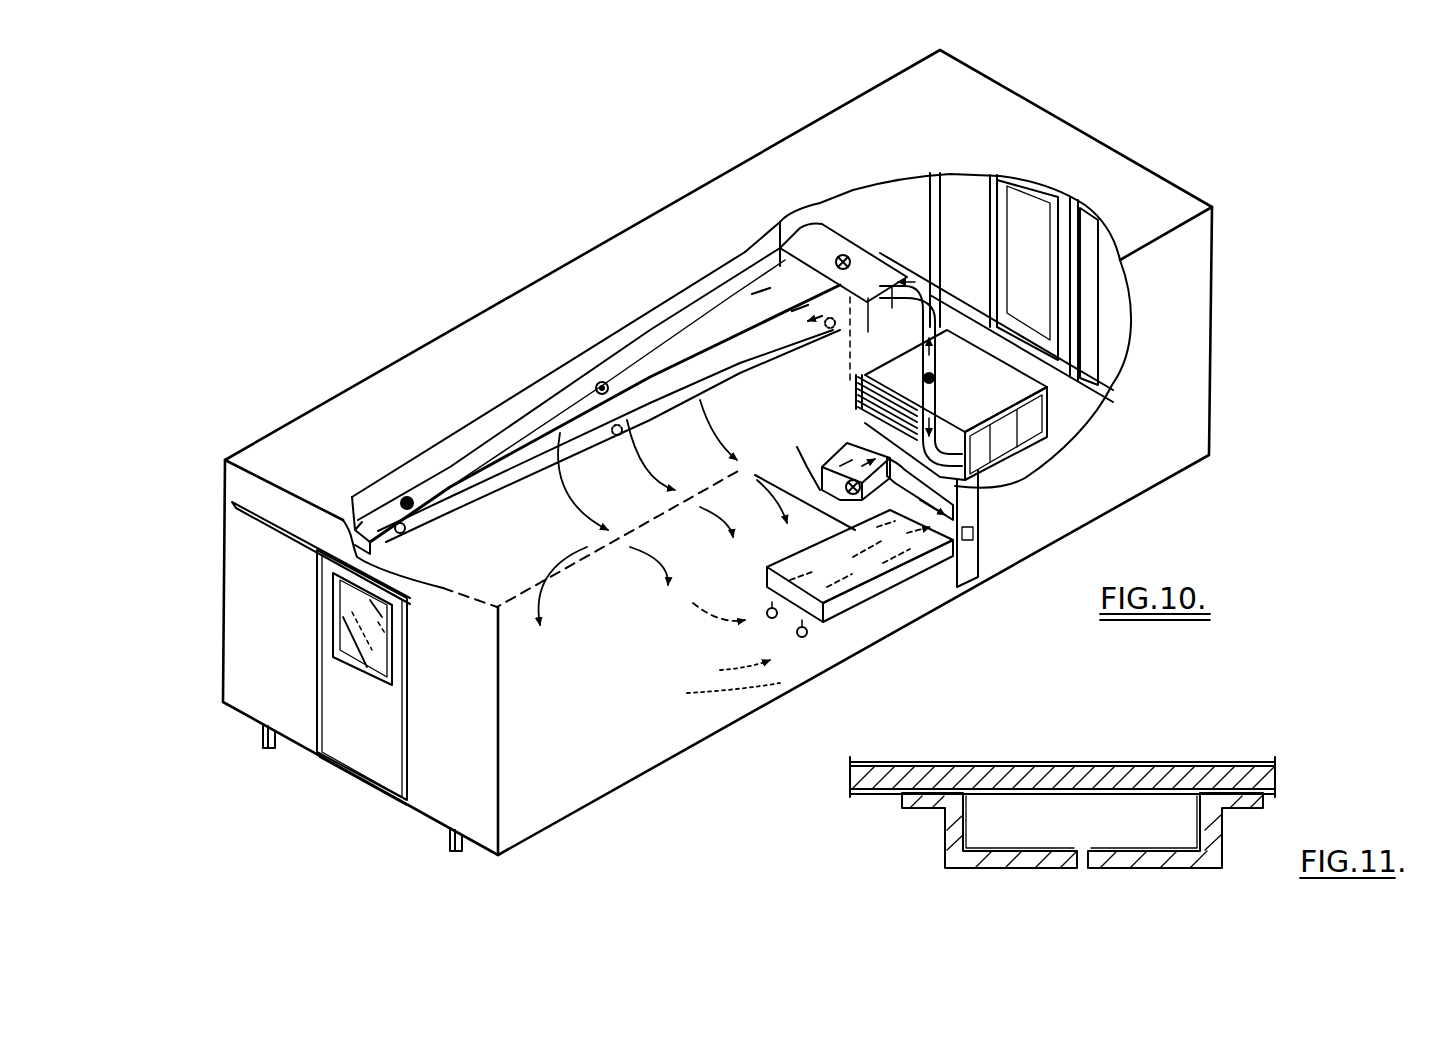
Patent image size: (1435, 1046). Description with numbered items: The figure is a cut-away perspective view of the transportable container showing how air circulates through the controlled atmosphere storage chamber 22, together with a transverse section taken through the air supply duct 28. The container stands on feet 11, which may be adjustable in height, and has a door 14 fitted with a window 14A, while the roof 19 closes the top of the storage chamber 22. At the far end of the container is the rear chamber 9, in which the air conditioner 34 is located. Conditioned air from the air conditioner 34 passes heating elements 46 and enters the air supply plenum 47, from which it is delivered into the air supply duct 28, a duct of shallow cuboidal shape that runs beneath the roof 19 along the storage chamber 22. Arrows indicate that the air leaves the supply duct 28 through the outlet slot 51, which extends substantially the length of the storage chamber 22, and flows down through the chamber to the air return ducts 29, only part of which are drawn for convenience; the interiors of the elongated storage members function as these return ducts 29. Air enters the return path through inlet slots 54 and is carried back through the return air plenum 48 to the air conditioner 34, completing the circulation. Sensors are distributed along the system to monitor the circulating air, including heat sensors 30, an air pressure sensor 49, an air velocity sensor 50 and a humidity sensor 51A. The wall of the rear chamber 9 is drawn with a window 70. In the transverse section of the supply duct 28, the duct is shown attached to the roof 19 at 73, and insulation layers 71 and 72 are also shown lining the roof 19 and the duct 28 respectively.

In FIG. 10, the rear chamber 9 is at (1107, 305).
In FIG. 10, the feet 11 is at (263, 748).
In FIG. 10, the door 14 is at (371, 753).
In FIG. 10, the window 14A is at (362, 617).
In FIG. 10, the roof 19 is at (471, 385).
In FIG. 11, the roof 19 is at (1203, 752).
In FIG. 10, the controlled atmosphere storage chamber 22 is at (627, 653).
In FIG. 10, the air supply duct 28 is at (693, 323).
In FIG. 11, the air supply duct 28 is at (1180, 835).
In FIG. 10, the air return ducts 29 is at (857, 570).
In FIG. 10, the heat sensors 30 is at (602, 382).
In FIG. 10, the air conditioner 34 is at (993, 377).
In FIG. 10, the heating elements 46 is at (907, 393).
In FIG. 10, the air supply plenum 47 is at (934, 326).
In FIG. 10, the return air plenum 48 is at (847, 453).
In FIG. 10, the air pressure sensor 49 is at (400, 503).
In FIG. 10, the air velocity sensor 50 is at (845, 256).
In FIG. 11, the outlet slot 51 is at (1084, 850).
In FIG. 10, the humidity sensor 51A is at (407, 528).
In FIG. 10, the inlet slots 54 is at (950, 505).
In FIG. 10, the window 70 is at (1043, 207).
In FIG. 11, the insulation layer 71 is at (1090, 770).
In FIG. 11, the insulation layer 72 is at (950, 855).
In FIG. 11, the attachment of supply duct to roof 73 is at (915, 812).